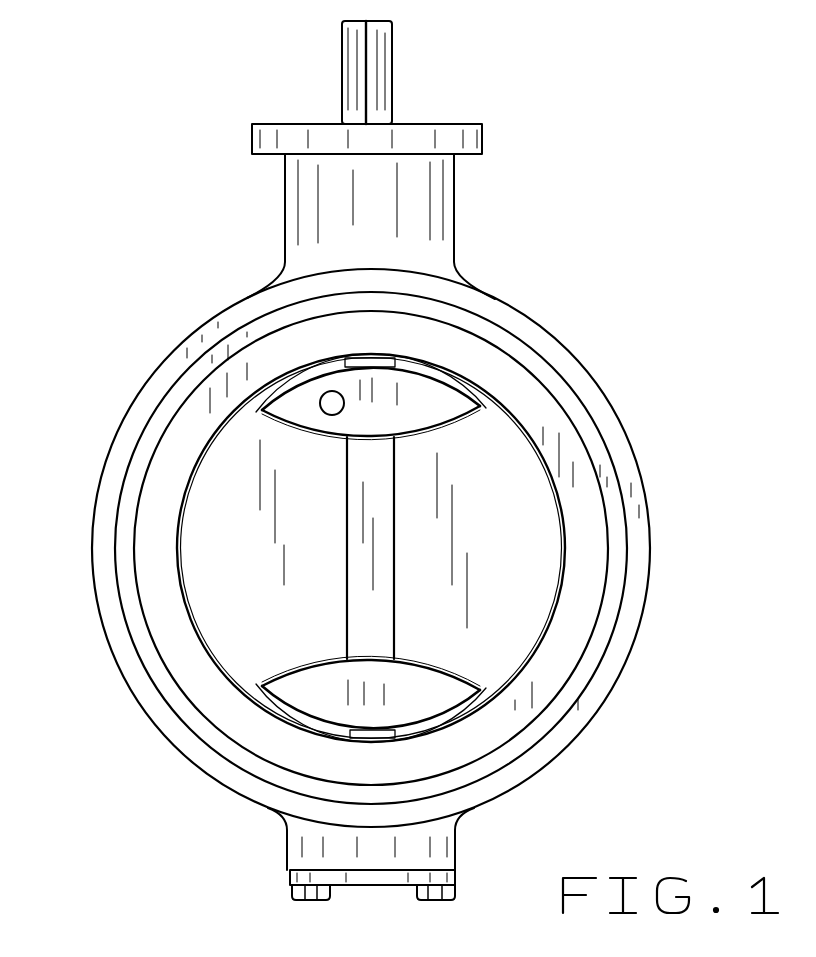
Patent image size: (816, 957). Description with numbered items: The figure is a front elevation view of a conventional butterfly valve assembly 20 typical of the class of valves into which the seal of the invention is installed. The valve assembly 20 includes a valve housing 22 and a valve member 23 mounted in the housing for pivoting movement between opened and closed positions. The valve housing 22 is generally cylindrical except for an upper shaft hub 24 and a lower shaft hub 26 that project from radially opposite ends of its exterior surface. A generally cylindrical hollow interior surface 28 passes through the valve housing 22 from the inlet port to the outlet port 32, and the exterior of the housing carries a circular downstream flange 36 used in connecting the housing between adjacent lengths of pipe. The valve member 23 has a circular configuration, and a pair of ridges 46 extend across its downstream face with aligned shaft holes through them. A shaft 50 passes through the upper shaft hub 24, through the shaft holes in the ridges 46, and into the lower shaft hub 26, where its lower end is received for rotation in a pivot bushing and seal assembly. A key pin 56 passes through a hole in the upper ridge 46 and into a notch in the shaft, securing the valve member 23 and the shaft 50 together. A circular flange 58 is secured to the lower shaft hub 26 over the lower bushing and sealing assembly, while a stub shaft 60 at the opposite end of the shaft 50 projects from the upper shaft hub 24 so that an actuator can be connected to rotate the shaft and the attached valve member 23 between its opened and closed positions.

The valve assembly 20 is at (538, 168).
The valve housing 22 is at (537, 322).
The valve member 23 is at (552, 540).
The upper shaft hub 24 is at (285, 215).
The lower shaft hub 26 is at (458, 845).
The hollow interior surface 28 is at (560, 490).
The outlet port 32 is at (608, 577).
The downstream flange 36 is at (605, 707).
The ridges 46 is at (312, 418).
The shaft 50 is at (360, 527).
The key pin 56 is at (325, 393).
The circular flange 58 is at (290, 877).
The stub shaft 60 is at (392, 65).